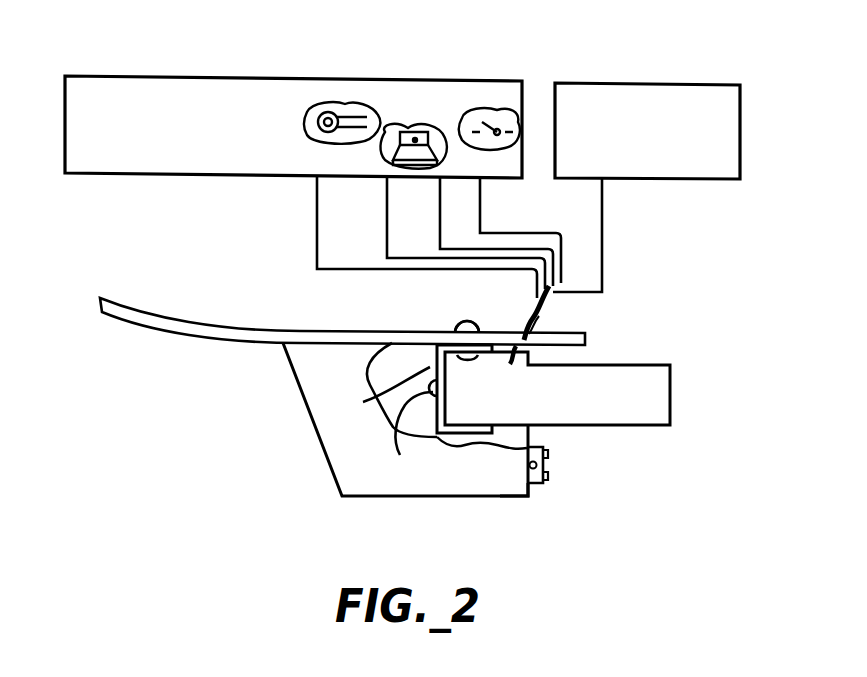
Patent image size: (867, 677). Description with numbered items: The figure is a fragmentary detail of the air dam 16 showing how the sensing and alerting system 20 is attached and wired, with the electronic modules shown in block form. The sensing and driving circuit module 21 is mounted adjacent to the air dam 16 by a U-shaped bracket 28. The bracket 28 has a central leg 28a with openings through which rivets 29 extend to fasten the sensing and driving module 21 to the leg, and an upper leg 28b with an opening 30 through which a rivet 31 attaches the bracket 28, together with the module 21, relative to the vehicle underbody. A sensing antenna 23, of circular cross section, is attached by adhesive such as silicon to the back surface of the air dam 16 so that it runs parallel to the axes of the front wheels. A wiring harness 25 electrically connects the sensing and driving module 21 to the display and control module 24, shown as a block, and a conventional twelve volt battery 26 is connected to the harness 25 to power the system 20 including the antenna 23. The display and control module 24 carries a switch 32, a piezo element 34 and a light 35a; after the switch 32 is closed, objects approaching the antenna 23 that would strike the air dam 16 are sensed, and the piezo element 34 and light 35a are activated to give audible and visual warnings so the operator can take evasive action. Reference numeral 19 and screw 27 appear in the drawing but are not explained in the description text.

The air dam 16 is at (346, 435).
The bracket foot 19 is at (530, 488).
The sensing and alerting system 20 is at (234, 283).
The sensing and driving circuit module 21 is at (636, 365).
The sensing antenna 23 is at (548, 453).
The display and control module 24 is at (252, 79).
The wiring harness 25 is at (537, 320).
The battery 26 is at (620, 83).
The screw 27 is at (547, 463).
The U-shaped bracket 28 is at (433, 357).
The central leg 28a is at (363, 402).
The upper leg 28b is at (510, 328).
The rivets 29 is at (414, 432).
The opening 30 is at (452, 326).
The rivet 31 is at (462, 321).
The switch 32 is at (490, 110).
The piezo element 34 is at (418, 132).
The light 35a is at (345, 103).